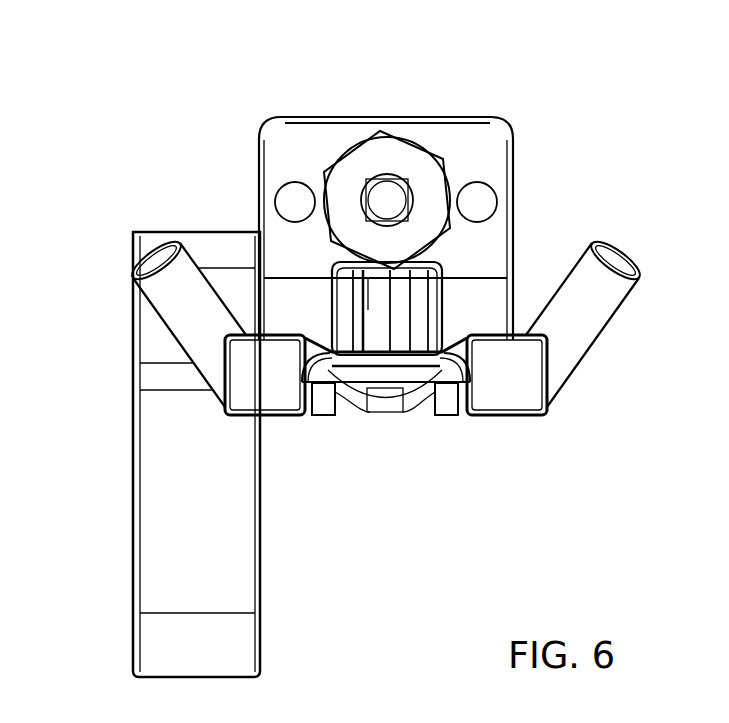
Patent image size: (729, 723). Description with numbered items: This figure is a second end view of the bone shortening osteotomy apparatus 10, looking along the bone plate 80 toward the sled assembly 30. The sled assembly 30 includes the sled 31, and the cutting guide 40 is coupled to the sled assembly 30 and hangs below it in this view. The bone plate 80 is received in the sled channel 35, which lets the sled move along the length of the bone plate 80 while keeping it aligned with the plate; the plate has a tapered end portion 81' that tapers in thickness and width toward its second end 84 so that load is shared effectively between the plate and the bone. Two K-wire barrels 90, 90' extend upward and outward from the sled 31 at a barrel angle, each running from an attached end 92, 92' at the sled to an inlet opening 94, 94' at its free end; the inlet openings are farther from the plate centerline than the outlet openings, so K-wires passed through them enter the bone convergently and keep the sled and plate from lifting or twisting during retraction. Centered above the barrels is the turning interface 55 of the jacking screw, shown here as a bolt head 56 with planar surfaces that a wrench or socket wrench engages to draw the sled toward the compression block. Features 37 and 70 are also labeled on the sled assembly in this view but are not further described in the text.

The bone shortening osteotomy apparatus 10 is at (208, 160).
The sled assembly 30 is at (290, 118).
The sled 31 is at (343, 127).
The sled channel 35 is at (453, 413).
The side edge of mounting plate 37 is at (515, 165).
The cutting guide 40 is at (157, 502).
The turning interface 55 is at (358, 163).
The bolt head 56 is at (410, 160).
The mounting holes 70 is at (473, 193).
The bone plate 80 is at (410, 410).
The tapered end portion 81' is at (370, 457).
The second end 84 is at (433, 413).
The K-wire barrel 90 is at (582, 294).
The K-wire barrel 90' is at (155, 325).
The attached end 92 is at (515, 431).
The attached end 92' is at (251, 420).
The inlet opening 94 is at (642, 220).
The inlet opening 94' is at (115, 208).